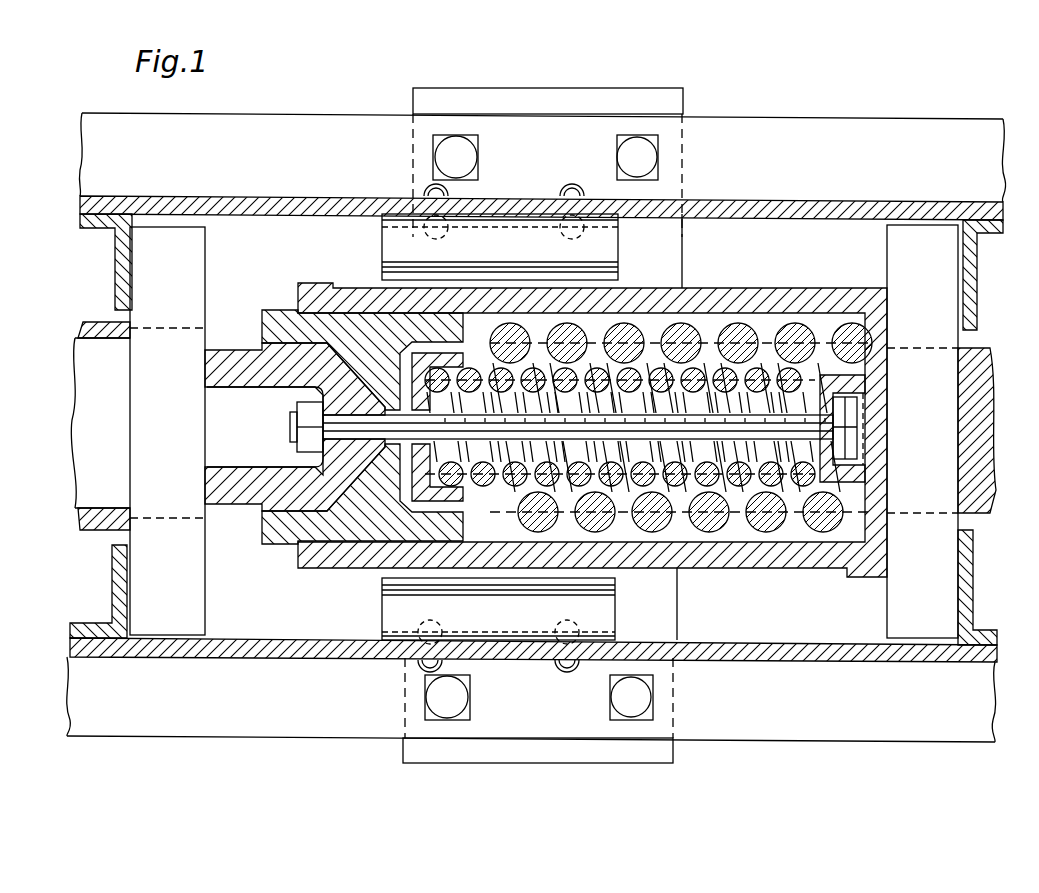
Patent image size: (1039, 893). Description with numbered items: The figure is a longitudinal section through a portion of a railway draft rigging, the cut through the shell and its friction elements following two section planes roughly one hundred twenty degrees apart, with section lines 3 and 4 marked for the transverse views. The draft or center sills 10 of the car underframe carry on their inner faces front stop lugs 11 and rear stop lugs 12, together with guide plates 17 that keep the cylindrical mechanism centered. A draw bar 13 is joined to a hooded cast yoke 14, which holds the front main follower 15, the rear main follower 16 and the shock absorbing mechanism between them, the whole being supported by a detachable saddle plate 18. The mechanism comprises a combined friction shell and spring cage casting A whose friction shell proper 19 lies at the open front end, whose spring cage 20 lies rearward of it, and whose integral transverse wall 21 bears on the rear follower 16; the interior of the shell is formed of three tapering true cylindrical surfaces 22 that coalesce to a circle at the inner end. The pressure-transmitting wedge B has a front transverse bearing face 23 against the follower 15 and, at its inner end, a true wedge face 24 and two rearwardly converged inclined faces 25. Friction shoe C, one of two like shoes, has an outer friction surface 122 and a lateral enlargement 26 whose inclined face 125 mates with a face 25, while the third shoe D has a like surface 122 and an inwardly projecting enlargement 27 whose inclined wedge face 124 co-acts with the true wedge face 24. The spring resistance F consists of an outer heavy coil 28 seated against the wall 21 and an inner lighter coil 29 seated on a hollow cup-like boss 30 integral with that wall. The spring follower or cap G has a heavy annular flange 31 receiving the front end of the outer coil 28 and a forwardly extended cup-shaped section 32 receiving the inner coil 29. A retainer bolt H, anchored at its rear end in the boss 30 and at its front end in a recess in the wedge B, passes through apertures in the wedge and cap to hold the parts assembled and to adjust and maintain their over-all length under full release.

The draft or center sills 10 is at (1003, 207).
The front stop lugs 11 is at (113, 250).
The rear stop lugs 12 is at (977, 270).
The draw bar 13 is at (88, 408).
The hooded cast yoke 14 is at (83, 328).
The front main follower 15 is at (167, 431).
The rear main follower 16 is at (922, 431).
The guide plates 17 is at (620, 278).
The saddle plate 18 is at (562, 760).
The friction shell proper 19 is at (340, 300).
The spring cage or casing 20 is at (707, 287).
The transverse wall 21 is at (880, 334).
The cylindrical surfaces 22 is at (383, 283).
The front transverse bearing face 23 is at (205, 375).
The true wedge face 24 is at (250, 512).
The inclined faces 25 is at (578, 426).
The lateral enlargement 26 is at (402, 330).
The inwardly projecting enlargement 27 is at (395, 565).
The outer heavy coil 28 is at (797, 327).
The inner lighter coil 29 is at (745, 342).
The hollow cup-like boss 30 is at (855, 457).
The annular flange 31 is at (513, 313).
The cup-shaped section 32 is at (423, 313).
The outer friction surface 122 is at (278, 310).
The inclined wedge face 124 is at (343, 570).
The inclined face 125 is at (327, 283).
The section line 3— 3 is at (369, 277).
The section line 4— 4 is at (312, 247).
The combined friction shell and spring cage casting A is at (640, 290).
The pressure-transmitting wedge B is at (215, 350).
The friction shoe C is at (264, 310).
The friction shoe D is at (255, 545).
The spring resistance F is at (747, 310).
The spring follower or cap G is at (477, 313).
The retainer bolt H is at (297, 428).